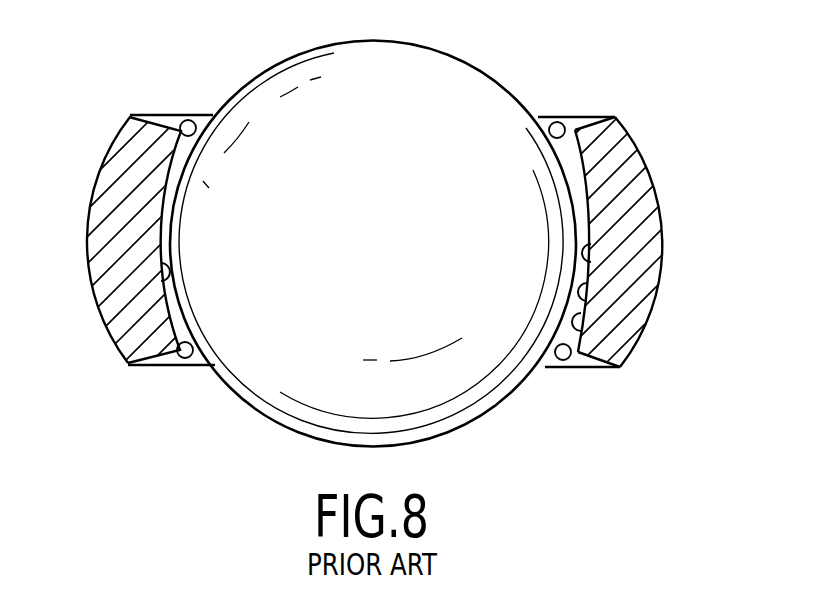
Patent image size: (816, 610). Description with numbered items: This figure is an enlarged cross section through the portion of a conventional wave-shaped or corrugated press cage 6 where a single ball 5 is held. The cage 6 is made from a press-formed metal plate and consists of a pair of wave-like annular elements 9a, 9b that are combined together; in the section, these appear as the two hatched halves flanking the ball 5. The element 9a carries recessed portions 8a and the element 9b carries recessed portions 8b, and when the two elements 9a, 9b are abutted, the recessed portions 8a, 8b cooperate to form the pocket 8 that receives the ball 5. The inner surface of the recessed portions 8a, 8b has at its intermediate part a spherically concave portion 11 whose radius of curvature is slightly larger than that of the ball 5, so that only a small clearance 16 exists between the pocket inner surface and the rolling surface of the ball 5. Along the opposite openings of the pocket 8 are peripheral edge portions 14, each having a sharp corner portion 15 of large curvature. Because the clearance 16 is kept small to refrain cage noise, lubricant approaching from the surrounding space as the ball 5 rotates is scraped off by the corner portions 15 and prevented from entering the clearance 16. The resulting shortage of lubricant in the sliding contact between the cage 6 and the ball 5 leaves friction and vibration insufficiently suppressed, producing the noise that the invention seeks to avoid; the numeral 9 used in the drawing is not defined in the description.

The ball 5 is at (447, 70).
The cage 6 is at (408, 250).
The pocket 8 is at (585, 282).
The recessed portion 8a is at (163, 284).
The recessed portion 8b is at (576, 318).
The left race segment 9 is at (126, 134).
The element 9a is at (92, 210).
The element 9b is at (626, 150).
The spherically concave portion 11 is at (593, 246).
The peripheral edge portion 14 is at (183, 121).
The corner portion 15 is at (182, 136).
The clearance 16 is at (583, 222).